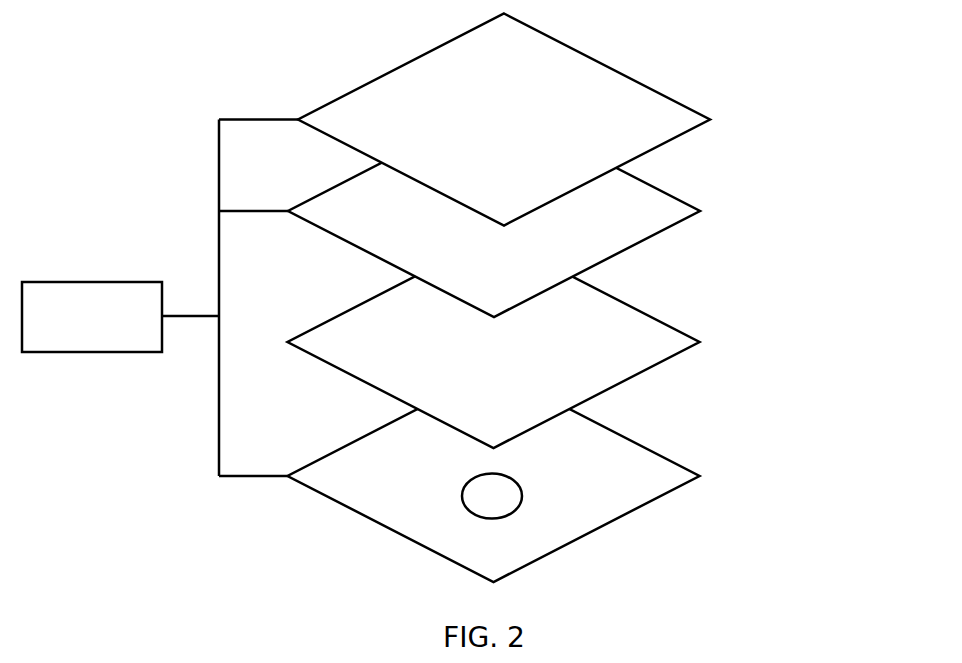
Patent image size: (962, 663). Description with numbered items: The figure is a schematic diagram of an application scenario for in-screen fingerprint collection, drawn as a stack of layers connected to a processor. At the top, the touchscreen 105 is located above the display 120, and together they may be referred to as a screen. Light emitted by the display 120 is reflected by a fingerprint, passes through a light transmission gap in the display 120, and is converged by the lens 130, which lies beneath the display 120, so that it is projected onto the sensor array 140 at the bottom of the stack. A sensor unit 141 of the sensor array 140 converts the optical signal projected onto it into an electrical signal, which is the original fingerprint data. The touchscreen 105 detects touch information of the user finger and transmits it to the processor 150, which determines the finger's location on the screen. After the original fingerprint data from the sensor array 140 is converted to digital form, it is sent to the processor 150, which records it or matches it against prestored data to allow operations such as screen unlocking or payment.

The touchscreen 105 is at (680, 138).
The display 120 is at (650, 183).
The lens 130 is at (650, 368).
The sensor array 140 is at (623, 437).
The sensor unit 141 is at (515, 514).
The processor 150 is at (92, 317).